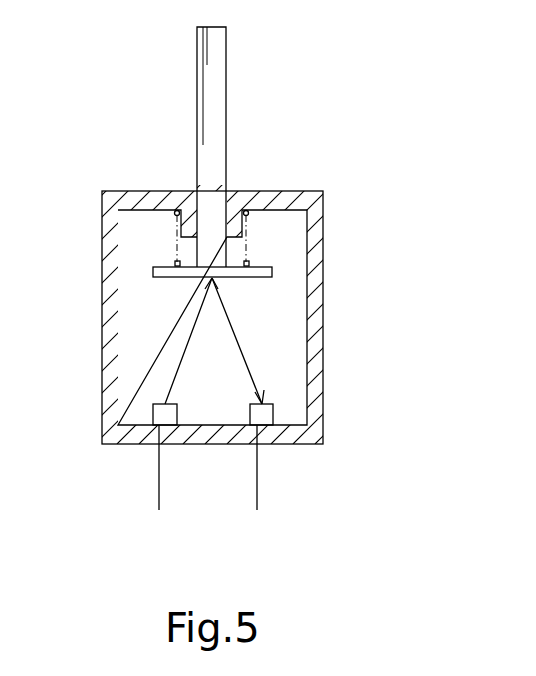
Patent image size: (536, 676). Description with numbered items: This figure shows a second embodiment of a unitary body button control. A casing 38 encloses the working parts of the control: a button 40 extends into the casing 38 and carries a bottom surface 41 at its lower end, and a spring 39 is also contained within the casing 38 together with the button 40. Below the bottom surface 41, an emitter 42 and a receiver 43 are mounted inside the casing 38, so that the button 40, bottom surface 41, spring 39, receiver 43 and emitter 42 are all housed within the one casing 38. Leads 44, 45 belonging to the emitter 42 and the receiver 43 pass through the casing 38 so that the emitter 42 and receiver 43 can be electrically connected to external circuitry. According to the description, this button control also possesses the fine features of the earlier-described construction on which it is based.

The casing 38 is at (318, 318).
The spring 39 is at (249, 241).
The button 40 is at (217, 68).
The bottom surface 41 is at (255, 278).
The emitter 42 is at (155, 405).
The receiver 43 is at (270, 406).
The lead 44 is at (158, 483).
The lead 45 is at (258, 481).